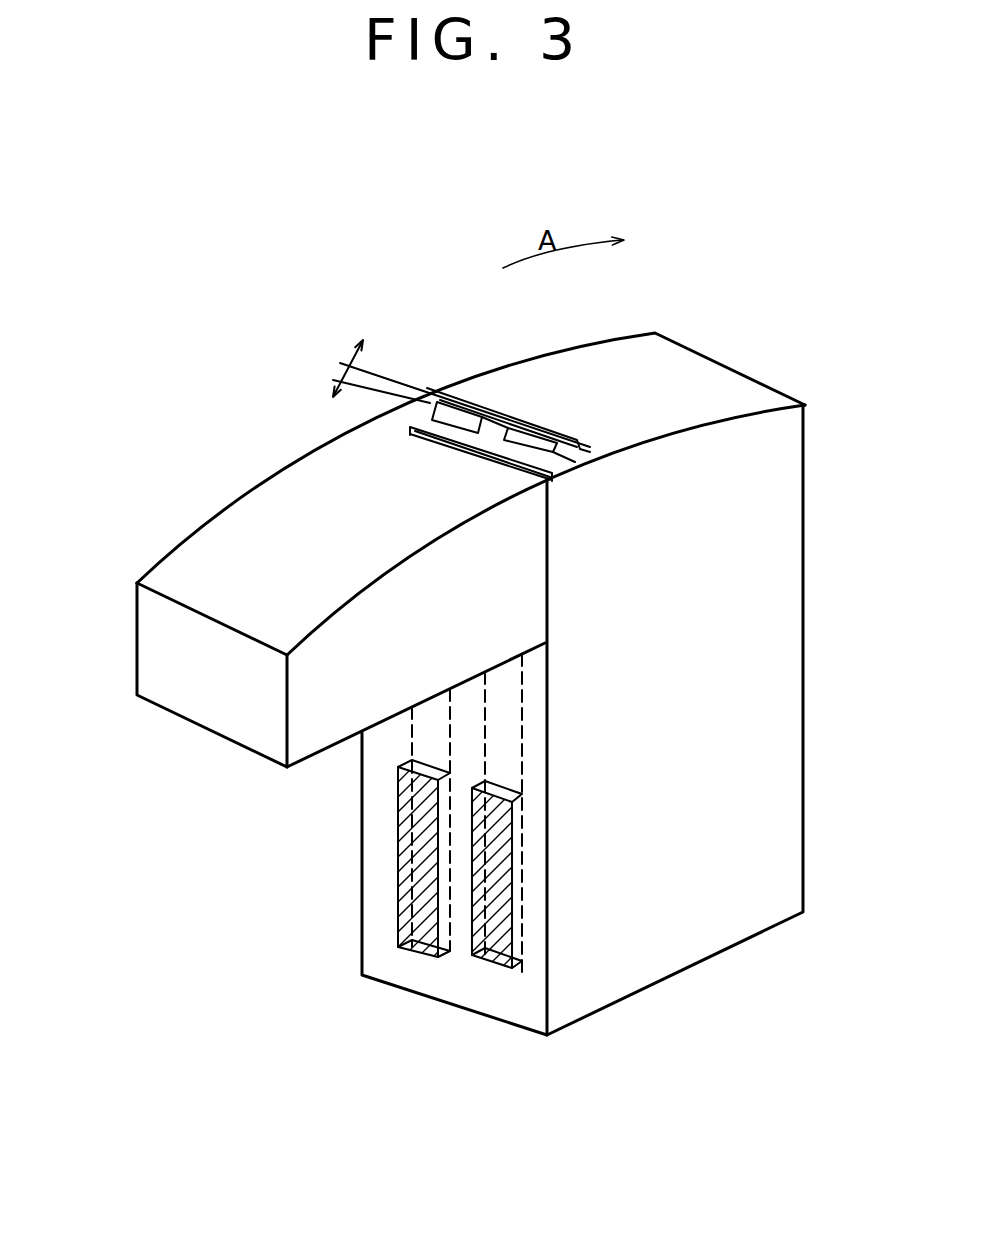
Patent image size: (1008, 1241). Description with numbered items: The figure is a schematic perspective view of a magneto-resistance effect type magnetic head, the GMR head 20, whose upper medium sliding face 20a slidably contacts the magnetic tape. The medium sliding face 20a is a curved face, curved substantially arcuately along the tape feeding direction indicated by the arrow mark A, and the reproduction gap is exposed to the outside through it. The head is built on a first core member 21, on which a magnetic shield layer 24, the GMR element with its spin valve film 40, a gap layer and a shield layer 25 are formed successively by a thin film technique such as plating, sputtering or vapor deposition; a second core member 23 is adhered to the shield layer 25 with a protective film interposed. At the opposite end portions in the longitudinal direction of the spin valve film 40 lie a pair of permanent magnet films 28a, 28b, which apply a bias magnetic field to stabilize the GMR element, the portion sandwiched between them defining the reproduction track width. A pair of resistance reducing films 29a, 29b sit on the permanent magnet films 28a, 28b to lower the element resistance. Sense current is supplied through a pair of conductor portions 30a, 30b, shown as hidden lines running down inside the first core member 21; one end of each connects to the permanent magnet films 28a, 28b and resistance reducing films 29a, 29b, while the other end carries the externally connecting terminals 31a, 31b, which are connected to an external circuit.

The GMR head 20 is at (465, 608).
The medium sliding face 20a is at (637, 352).
The first core member 21 is at (670, 943).
The second core member 23 is at (150, 645).
The magnetic shield layer 24 is at (606, 452).
The shield layer 25 is at (408, 431).
The permanent magnet film 28a is at (573, 443).
The permanent magnet film 28b is at (475, 417).
The resistance reducing film 29a is at (575, 468).
The resistance reducing film 29b is at (455, 410).
The conductor portion 30a is at (507, 743).
The conductor portion 30b is at (417, 736).
The externally connecting terminal 31a is at (480, 957).
The externally connecting terminal 31b is at (407, 855).
The spin valve film 40 is at (503, 428).